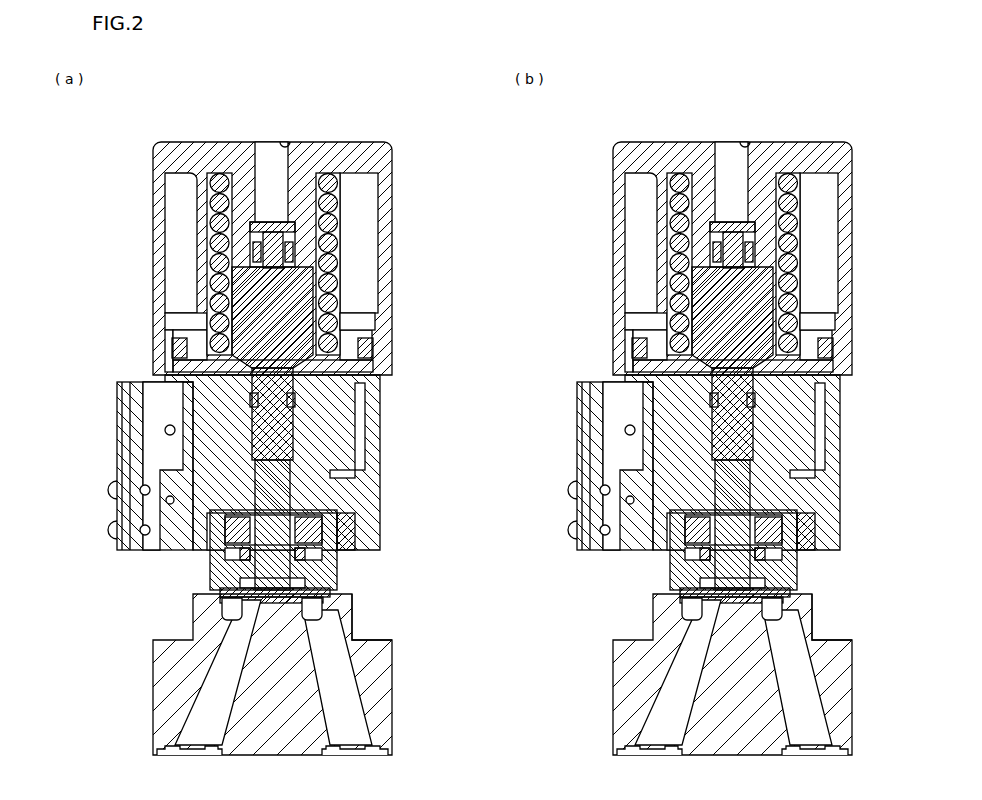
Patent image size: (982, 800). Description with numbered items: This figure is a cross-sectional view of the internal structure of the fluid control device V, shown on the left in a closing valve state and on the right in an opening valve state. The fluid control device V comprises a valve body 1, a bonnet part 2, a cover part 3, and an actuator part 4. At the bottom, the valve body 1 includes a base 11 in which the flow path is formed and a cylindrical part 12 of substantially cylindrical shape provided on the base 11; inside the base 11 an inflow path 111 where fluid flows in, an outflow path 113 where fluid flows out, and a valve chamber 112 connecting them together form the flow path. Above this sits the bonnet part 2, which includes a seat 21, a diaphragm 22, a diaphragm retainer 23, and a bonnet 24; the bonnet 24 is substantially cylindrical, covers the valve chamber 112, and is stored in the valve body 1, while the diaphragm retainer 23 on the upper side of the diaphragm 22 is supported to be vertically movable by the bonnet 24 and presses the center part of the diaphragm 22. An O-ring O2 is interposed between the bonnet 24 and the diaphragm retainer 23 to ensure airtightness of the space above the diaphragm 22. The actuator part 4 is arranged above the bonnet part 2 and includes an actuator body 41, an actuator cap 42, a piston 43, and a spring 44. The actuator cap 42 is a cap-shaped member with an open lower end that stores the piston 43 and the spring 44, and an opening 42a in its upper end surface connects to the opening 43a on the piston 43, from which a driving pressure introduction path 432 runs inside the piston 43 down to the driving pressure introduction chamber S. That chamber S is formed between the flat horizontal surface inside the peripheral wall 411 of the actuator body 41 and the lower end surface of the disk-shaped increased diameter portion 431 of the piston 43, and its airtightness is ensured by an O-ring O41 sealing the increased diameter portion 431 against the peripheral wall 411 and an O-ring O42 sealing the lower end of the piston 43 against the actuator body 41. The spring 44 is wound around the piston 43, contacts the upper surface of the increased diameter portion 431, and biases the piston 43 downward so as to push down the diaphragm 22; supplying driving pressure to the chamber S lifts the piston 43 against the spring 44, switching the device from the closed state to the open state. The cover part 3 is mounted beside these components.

The valve body 1 is at (154, 657).
The base 11 is at (393, 728).
The inflow path 111 is at (200, 699).
The valve chamber 112 is at (324, 600).
The outflow path 113 is at (352, 682).
The cylindrical part 12 is at (355, 623).
The bonnet part 2 is at (205, 560).
The seat 21 is at (228, 598).
The diaphragm 22 is at (331, 593).
The diaphragm retainer 23 is at (331, 500).
The bonnet 24 is at (356, 540).
The O-ring O2 is at (338, 561).
The cover part 3 is at (115, 410).
The actuator part 4 is at (153, 199).
The actuator body 41 is at (382, 452).
The peripheral wall 411 is at (386, 320).
The actuator cap 42 is at (393, 205).
The opening 42a is at (289, 145).
The piston 43 is at (381, 247).
The opening 43a is at (268, 222).
The increased diameter portion 431 is at (386, 330).
The driving pressure introduction path 432 is at (272, 296).
The spring 44 is at (381, 278).
The O-ring O41 is at (386, 355).
The O-ring O42 is at (296, 399).
The driving pressure introduction chamber S is at (170, 366).
The fluid control device V is at (406, 146).